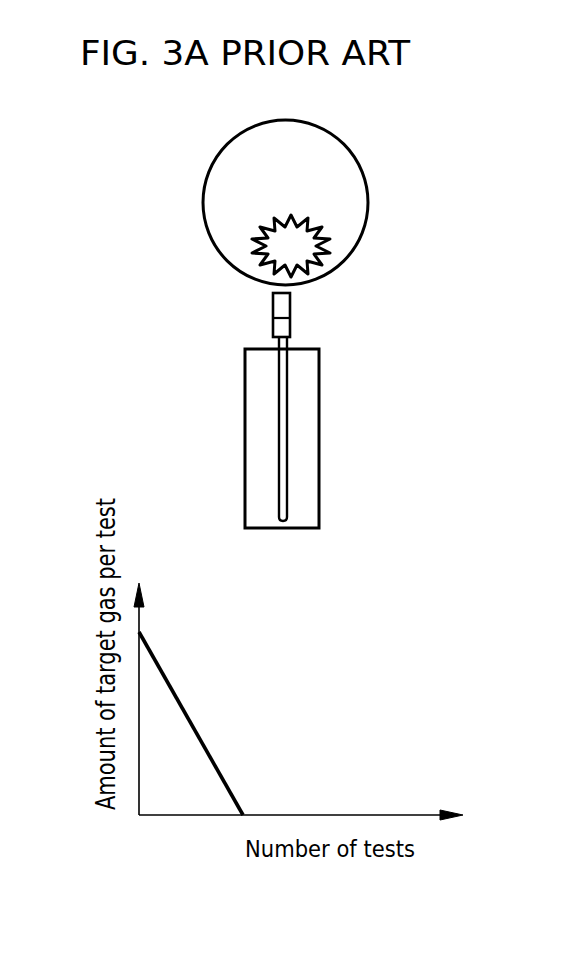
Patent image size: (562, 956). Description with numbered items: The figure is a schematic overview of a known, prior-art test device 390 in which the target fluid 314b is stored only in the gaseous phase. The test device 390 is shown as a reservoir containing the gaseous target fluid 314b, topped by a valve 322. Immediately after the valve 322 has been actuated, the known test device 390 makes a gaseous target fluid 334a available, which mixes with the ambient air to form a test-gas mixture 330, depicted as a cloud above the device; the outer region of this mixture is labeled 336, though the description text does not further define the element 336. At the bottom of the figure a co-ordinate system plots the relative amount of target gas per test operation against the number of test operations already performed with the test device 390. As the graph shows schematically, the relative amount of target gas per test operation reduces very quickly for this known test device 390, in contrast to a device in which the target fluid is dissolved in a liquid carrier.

The test-gas mixture 330 is at (356, 202).
The gas bag 336 is at (357, 193).
The gaseous target fluid 334a is at (312, 245).
The known test device 390 is at (278, 408).
The valve 322 is at (291, 321).
The gaseous target fluid 314b is at (305, 422).